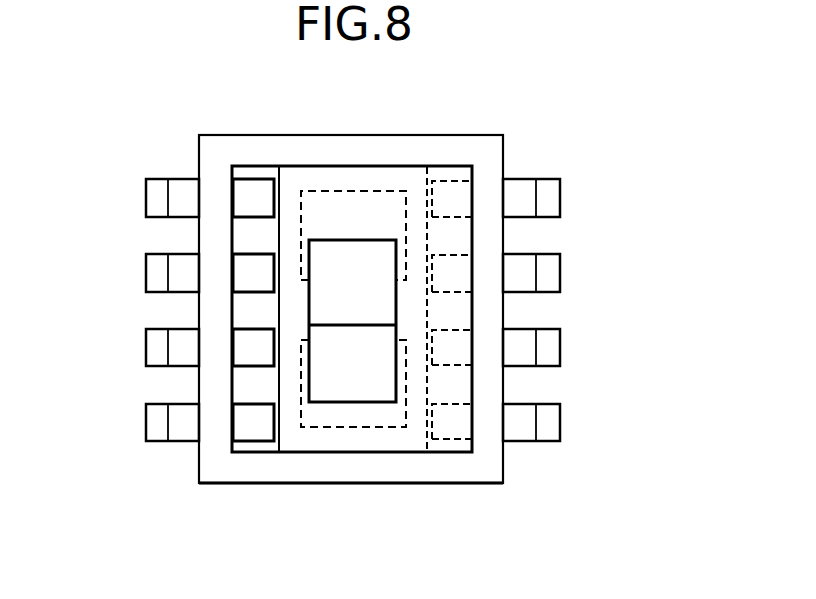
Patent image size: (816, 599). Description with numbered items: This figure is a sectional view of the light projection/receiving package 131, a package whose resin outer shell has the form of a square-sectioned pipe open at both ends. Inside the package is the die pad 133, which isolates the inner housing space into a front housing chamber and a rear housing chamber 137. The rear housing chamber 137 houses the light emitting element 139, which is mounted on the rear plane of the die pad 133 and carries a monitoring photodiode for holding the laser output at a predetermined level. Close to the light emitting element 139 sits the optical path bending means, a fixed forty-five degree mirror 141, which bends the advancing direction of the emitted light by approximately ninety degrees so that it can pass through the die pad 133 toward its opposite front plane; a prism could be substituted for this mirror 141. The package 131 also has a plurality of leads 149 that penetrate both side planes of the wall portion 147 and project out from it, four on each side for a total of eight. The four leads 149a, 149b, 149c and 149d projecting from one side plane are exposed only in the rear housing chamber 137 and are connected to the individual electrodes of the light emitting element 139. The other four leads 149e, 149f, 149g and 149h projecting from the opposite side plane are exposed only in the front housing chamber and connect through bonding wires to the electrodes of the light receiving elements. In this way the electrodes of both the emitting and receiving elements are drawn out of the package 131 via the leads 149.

The light projection/receiving package 131 is at (552, 153).
The die pad 133 is at (300, 443).
The rear housing chamber 137 is at (270, 237).
The light emitting element 139 is at (367, 380).
The optical path bending means (fixed 45° mirror) 141 is at (363, 262).
The wall portion 147 is at (214, 462).
The leads 149 is at (693, 210).
The lead 149a is at (146, 195).
The lead 149b is at (146, 271).
The lead 149c is at (146, 347).
The lead 149d is at (146, 424).
The lead 149e is at (560, 198).
The lead 149f is at (560, 272).
The lead 149g is at (560, 345).
The lead 149h is at (560, 420).